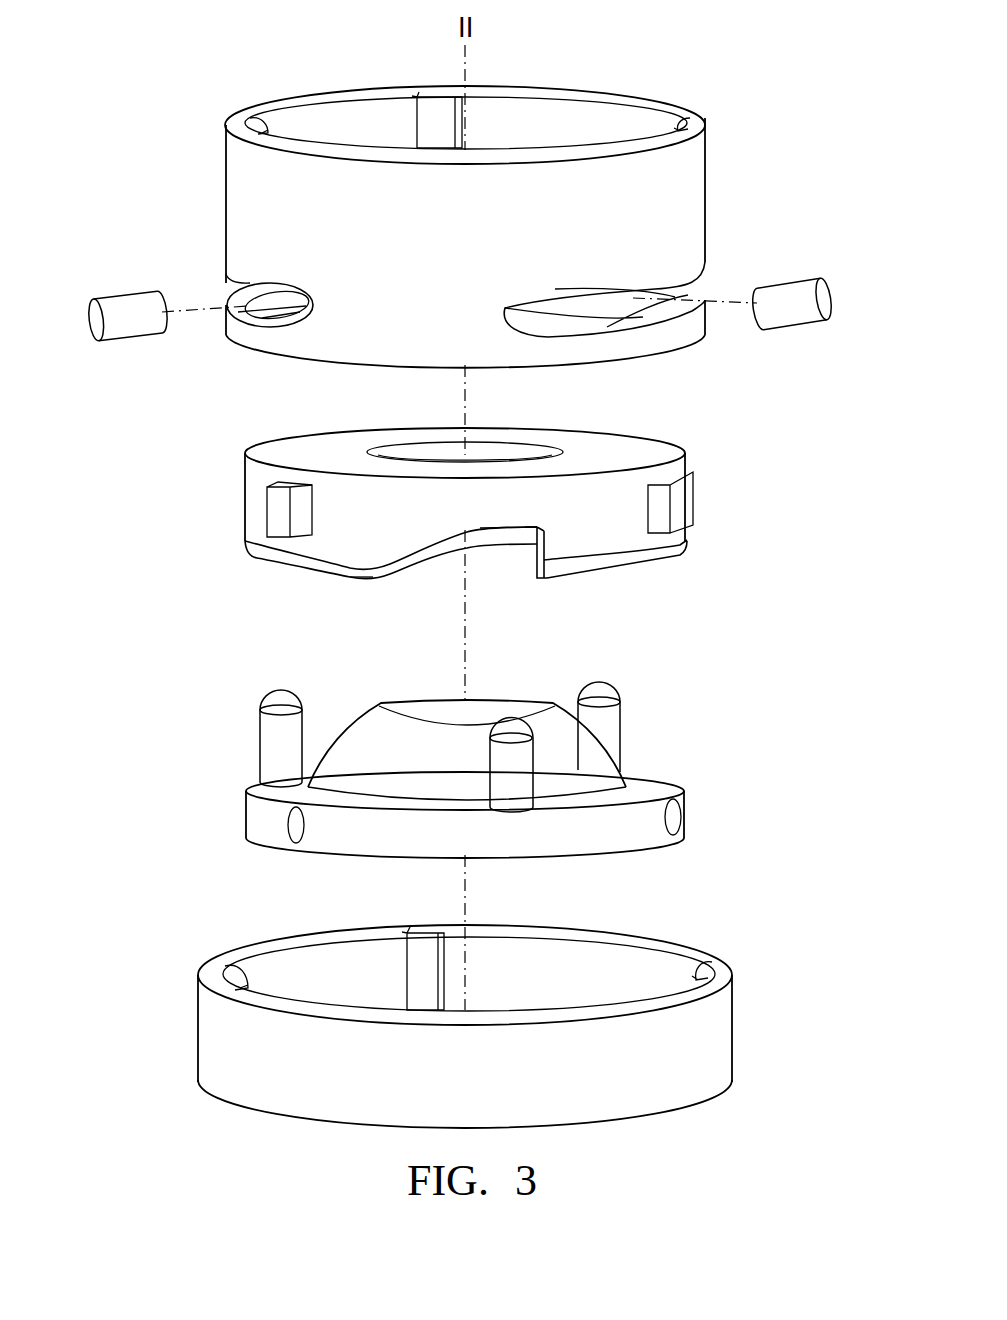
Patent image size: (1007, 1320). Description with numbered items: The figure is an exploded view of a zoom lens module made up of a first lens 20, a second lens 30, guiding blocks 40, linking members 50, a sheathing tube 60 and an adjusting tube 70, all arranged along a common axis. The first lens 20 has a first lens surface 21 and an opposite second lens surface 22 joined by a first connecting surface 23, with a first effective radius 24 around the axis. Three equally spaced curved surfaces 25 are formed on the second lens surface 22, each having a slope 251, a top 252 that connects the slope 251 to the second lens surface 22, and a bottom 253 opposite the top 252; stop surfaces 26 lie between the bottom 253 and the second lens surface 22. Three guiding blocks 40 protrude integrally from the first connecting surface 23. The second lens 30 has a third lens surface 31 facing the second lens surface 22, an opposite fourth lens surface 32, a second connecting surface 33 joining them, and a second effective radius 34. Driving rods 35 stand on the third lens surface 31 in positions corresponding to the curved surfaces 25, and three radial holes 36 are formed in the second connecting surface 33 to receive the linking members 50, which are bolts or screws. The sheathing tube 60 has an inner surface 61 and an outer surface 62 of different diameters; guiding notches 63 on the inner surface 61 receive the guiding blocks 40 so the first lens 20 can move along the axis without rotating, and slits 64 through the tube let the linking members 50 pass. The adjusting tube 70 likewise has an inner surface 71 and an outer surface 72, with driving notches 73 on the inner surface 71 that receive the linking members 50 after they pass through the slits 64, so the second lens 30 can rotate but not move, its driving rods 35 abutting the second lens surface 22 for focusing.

The first lens 20 is at (666, 431).
The first lens surface 21 is at (290, 437).
The second lens surface 22 is at (272, 558).
The first connecting surface 23 is at (258, 475).
The first effective radius 24 is at (425, 455).
The curved surfaces 25 is at (421, 568).
The slope 251 is at (478, 538).
The top 252 is at (362, 578).
The bottom 253 is at (530, 535).
The stop surfaces 26 is at (541, 572).
The second lens 30 is at (700, 795).
The third lens surface 31 is at (637, 780).
The fourth lens surface 32 is at (600, 858).
The second connecting surface 33 is at (640, 838).
The second effective radius 34 is at (368, 735).
The second driving rod 35 is at (270, 735).
The radial holes 36 is at (292, 822).
The guiding blocks 40 is at (275, 510).
The linking members 50 is at (125, 305).
The sheathing tube 60 is at (692, 95).
The inner surface 61 is at (581, 103).
The outer surface 62 is at (695, 172).
The guiding notches 63 is at (437, 103).
The slits 64 is at (240, 298).
The adjusting tube 70 is at (708, 944).
The inner surface 71 is at (290, 945).
The side wall of lower ring 72 is at (213, 1035).
The driving notches 73 is at (420, 945).